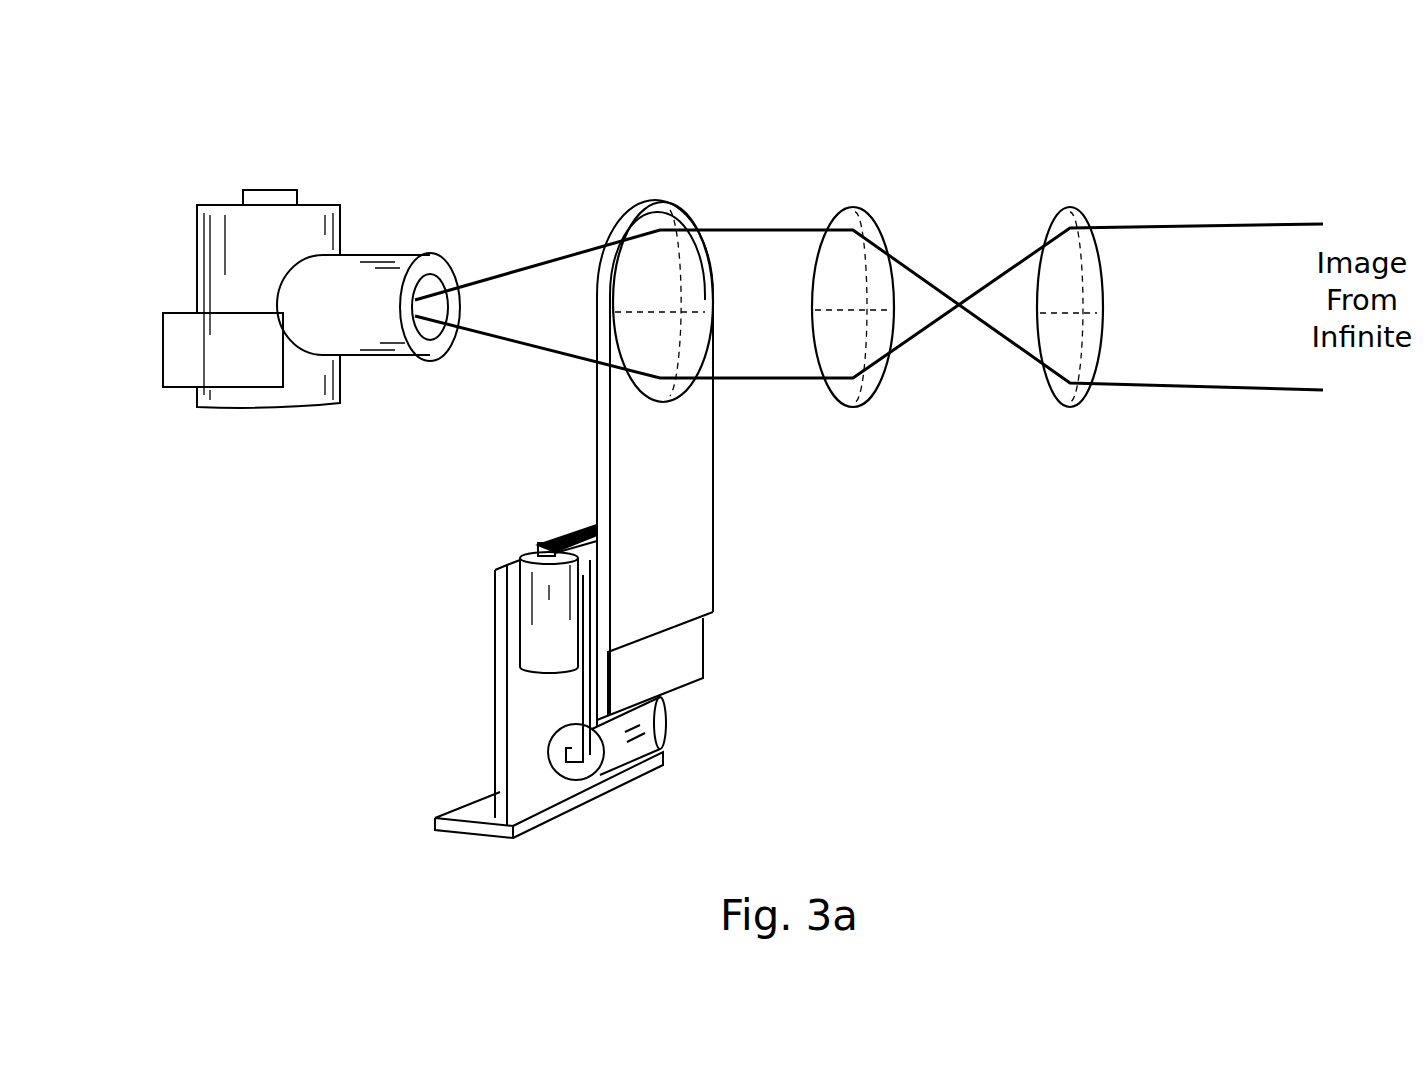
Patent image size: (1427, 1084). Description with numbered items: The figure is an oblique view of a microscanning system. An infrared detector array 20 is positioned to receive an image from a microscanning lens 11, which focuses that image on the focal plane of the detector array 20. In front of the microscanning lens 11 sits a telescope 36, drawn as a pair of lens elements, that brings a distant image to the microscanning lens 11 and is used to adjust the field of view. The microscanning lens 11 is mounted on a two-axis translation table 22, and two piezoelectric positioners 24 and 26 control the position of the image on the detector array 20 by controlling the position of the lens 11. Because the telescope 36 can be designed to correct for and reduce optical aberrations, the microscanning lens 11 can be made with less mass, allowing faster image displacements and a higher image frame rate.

The infrared detector array 20 is at (343, 235).
The microscanning lens 11 is at (670, 228).
The telescope 36 is at (1068, 208).
The two-axis translation table 22 is at (553, 538).
The piezoelectric positioner 24 is at (520, 627).
The piezoelectric positioner 26 is at (583, 762).